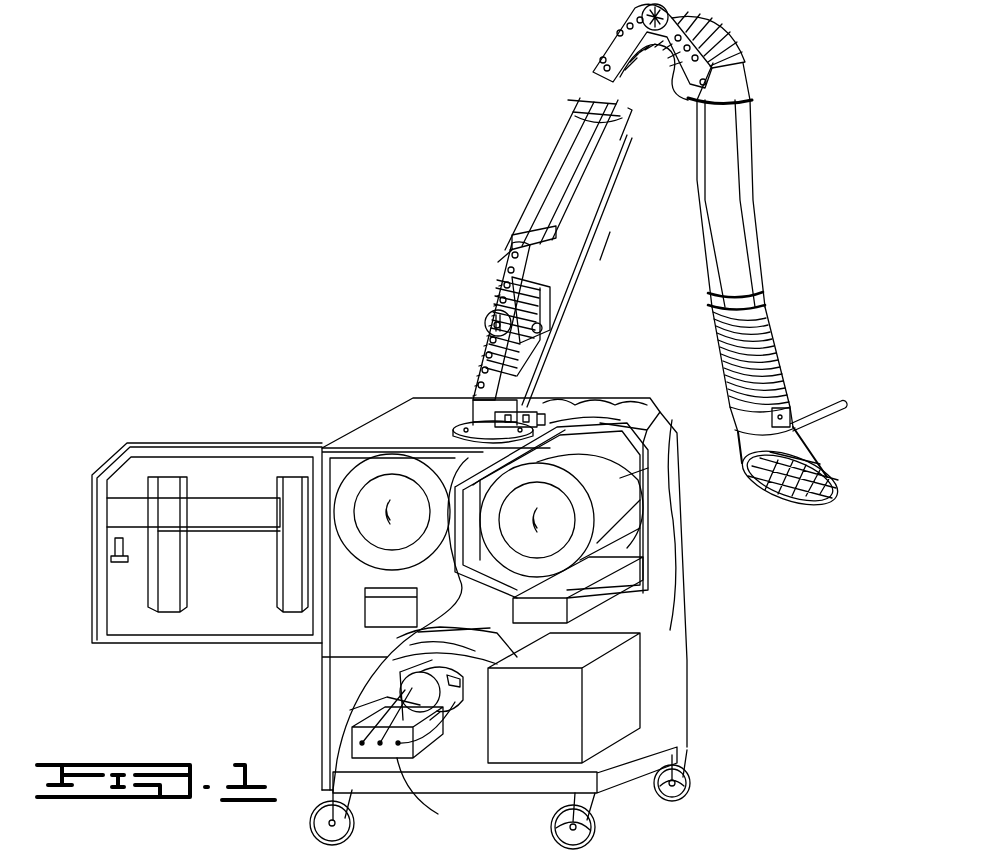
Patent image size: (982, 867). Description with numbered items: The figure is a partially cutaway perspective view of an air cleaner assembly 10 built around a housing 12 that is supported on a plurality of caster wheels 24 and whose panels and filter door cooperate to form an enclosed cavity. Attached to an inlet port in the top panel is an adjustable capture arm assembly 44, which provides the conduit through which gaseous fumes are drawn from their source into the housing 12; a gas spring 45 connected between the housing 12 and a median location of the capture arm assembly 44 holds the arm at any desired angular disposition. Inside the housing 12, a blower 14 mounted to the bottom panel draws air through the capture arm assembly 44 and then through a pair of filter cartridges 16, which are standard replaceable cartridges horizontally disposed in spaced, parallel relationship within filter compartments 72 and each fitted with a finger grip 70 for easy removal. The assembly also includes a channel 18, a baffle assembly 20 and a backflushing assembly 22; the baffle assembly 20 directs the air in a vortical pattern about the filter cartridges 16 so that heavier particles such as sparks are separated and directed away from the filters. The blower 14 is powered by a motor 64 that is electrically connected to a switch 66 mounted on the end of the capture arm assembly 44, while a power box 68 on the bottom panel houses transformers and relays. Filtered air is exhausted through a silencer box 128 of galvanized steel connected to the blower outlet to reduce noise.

The air cleaner assembly 10 is at (245, 360).
The housing 12 is at (400, 405).
The blower 14 is at (405, 690).
The filter cartridges 16 is at (378, 478).
The channel 18 is at (478, 470).
The baffle assembly 20 is at (598, 573).
The backflushing assembly 22 is at (495, 630).
The caster wheels 24 is at (352, 840).
The capture arm assembly 44 is at (545, 163).
The gas spring 45 is at (583, 265).
The motor 64 is at (352, 727).
The switch 66 is at (790, 422).
The power box 68 is at (431, 792).
The finger grip 70 is at (392, 525).
The filter compartments 72 is at (633, 445).
The silencer box 128 is at (628, 710).